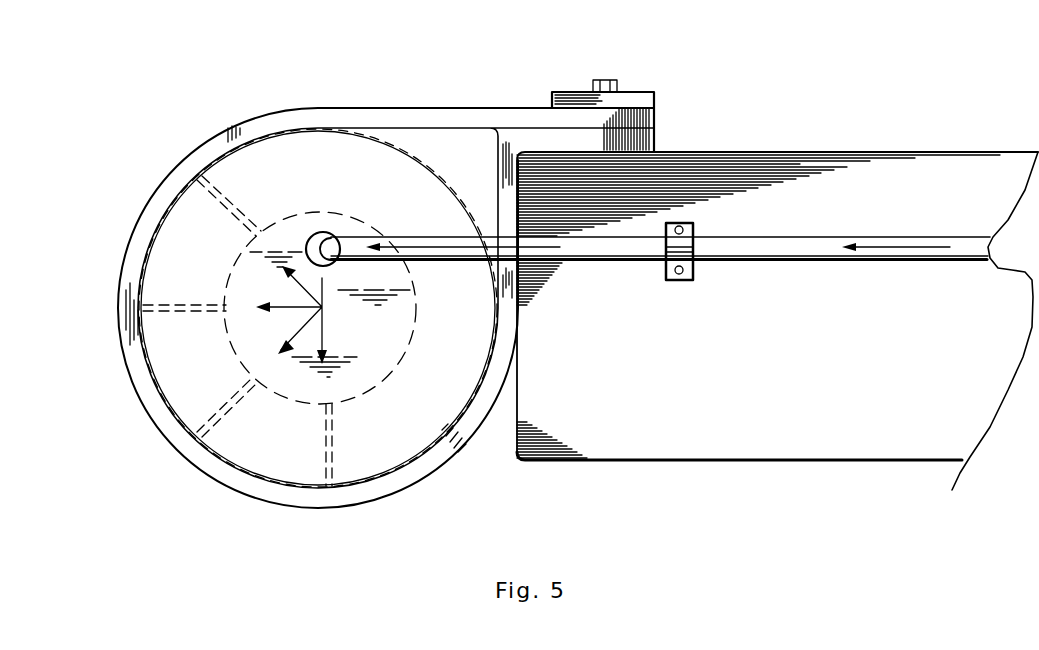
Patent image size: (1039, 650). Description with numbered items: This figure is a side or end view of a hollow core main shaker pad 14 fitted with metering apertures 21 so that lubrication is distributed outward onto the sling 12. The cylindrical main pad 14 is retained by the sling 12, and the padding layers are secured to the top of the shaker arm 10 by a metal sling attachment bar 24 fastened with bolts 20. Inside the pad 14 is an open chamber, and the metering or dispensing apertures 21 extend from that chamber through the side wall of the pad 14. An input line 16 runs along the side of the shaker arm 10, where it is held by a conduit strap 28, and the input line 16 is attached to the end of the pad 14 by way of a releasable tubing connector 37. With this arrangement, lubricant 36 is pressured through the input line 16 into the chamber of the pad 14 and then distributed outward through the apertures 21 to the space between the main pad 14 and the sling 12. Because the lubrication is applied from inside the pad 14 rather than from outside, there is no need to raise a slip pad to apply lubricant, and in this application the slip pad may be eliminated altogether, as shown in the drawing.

The shaker arm 10 is at (835, 423).
The sling 12 is at (425, 460).
The main pad 14 is at (268, 452).
The input line 16 is at (813, 248).
The bolts 20 is at (612, 80).
The metering apertures 21 is at (198, 183).
The sling attachment bar 24 is at (656, 100).
The conduit strap 28 is at (688, 272).
The lubricant 36 is at (257, 142).
The releasable tubing connector 37 is at (333, 229).